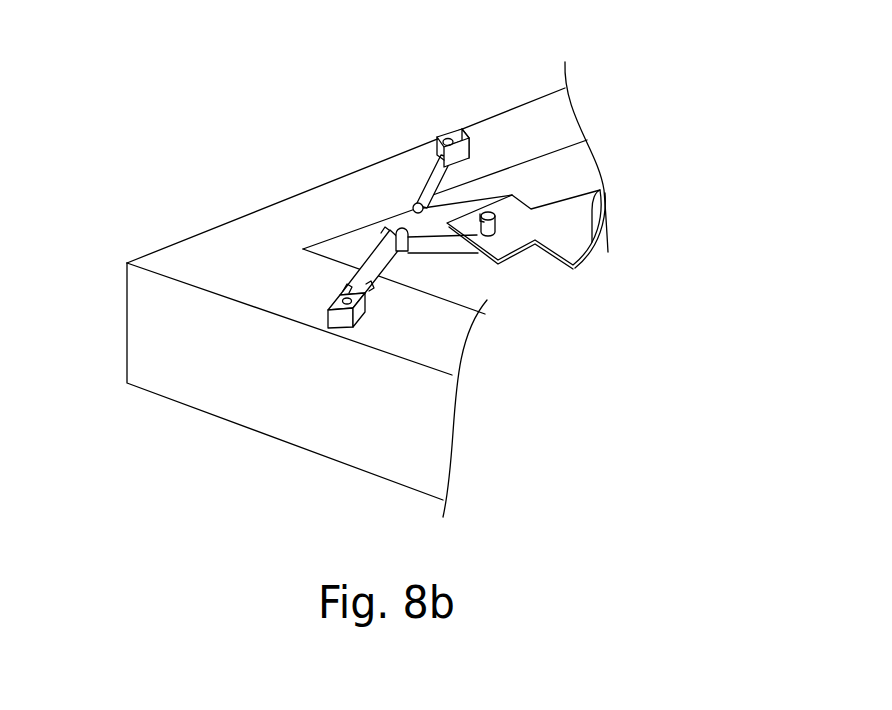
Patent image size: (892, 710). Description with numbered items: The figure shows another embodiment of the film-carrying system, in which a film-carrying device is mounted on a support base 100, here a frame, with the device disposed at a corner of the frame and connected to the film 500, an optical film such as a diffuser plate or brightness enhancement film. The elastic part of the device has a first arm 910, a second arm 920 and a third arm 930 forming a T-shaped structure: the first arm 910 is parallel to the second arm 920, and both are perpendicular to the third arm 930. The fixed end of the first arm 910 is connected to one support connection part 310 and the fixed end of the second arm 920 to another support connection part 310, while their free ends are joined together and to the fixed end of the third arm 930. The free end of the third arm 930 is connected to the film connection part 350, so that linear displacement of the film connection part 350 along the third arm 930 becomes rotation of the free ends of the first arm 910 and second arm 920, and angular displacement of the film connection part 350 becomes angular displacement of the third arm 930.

The support base 100 is at (257, 237).
The support connection part 310 is at (457, 128).
The first arm 910 is at (422, 183).
The second arm 920 is at (373, 267).
The third arm 930 is at (433, 223).
The film 500 is at (570, 215).
The film connection part 350 is at (495, 220).